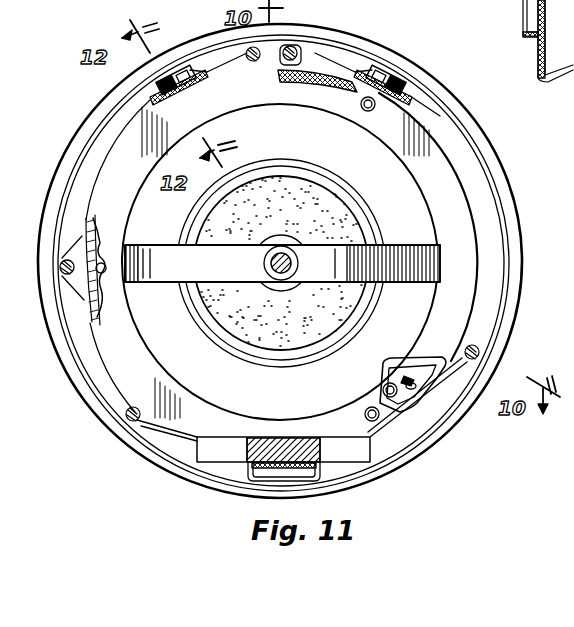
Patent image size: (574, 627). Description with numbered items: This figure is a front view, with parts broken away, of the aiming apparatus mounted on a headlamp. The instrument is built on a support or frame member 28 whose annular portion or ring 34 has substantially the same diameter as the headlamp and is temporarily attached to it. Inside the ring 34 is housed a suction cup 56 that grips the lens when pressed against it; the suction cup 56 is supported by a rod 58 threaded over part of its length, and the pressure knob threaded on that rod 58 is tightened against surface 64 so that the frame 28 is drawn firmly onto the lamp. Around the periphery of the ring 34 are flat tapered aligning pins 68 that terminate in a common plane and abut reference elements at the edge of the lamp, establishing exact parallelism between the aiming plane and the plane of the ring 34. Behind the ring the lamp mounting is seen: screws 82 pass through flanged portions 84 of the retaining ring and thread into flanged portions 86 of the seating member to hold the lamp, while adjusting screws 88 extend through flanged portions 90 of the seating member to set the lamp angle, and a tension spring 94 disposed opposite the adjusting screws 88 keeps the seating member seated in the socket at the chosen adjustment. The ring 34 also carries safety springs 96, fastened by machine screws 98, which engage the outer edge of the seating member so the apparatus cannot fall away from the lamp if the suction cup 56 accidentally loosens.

The support or frame member 28 is at (462, 193).
The annular portion or ring 34 is at (402, 267).
The suction cup 56 is at (321, 196).
The rod 58 is at (264, 262).
The surface 64 is at (295, 253).
The seating elements or flat tapered aligning pins 68 is at (365, 110).
The screws 82 is at (255, 62).
The flanged portions of the retaining ring 84 is at (242, 63).
The flanged portions of the seating member 86 is at (527, 32).
The adjusting screws 88 is at (68, 283).
The flanged portions of the seating member 90 is at (84, 240).
The tension spring 94 is at (393, 414).
The safety springs 96 is at (170, 68).
The machine screws 98 is at (187, 70).